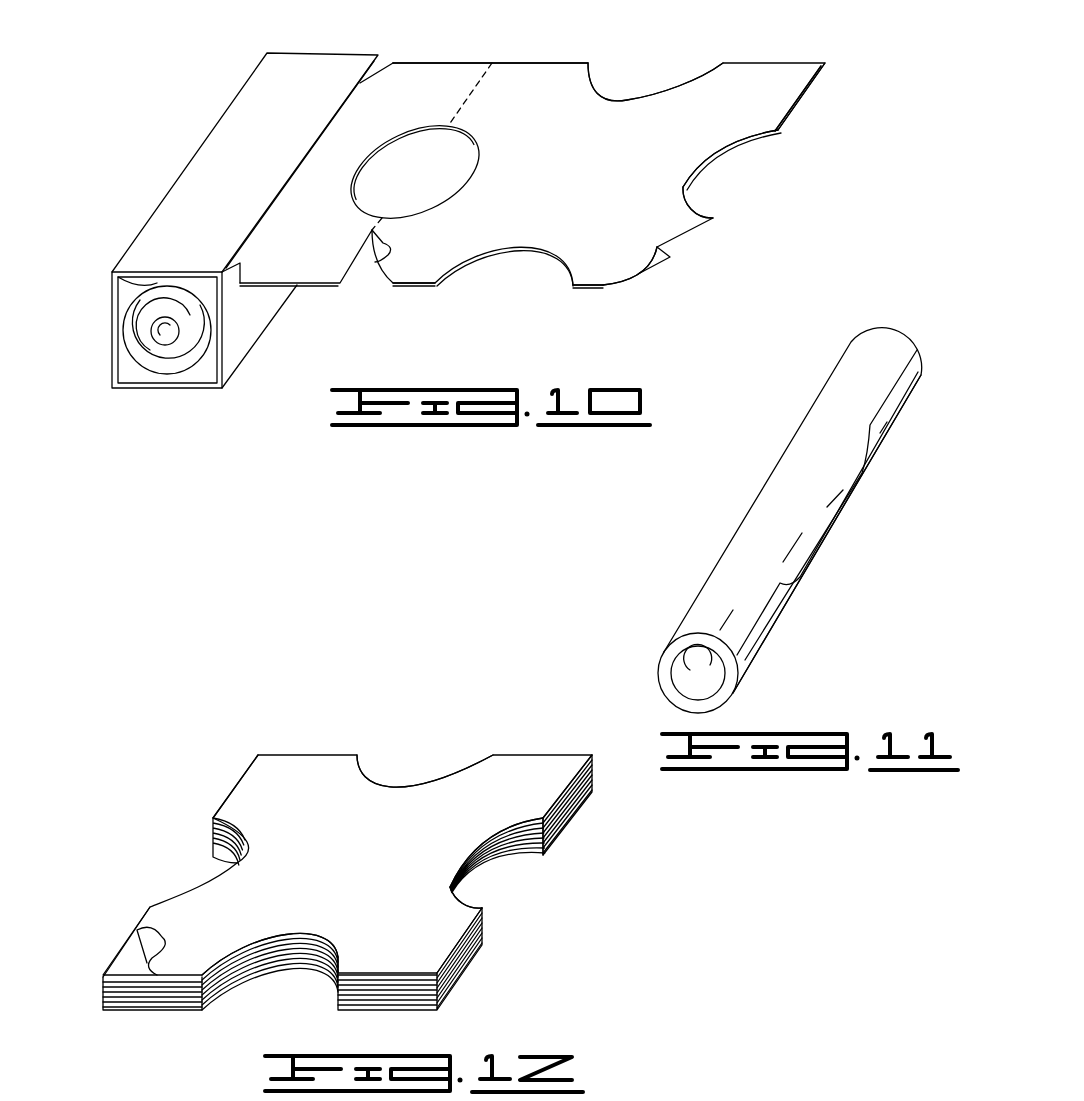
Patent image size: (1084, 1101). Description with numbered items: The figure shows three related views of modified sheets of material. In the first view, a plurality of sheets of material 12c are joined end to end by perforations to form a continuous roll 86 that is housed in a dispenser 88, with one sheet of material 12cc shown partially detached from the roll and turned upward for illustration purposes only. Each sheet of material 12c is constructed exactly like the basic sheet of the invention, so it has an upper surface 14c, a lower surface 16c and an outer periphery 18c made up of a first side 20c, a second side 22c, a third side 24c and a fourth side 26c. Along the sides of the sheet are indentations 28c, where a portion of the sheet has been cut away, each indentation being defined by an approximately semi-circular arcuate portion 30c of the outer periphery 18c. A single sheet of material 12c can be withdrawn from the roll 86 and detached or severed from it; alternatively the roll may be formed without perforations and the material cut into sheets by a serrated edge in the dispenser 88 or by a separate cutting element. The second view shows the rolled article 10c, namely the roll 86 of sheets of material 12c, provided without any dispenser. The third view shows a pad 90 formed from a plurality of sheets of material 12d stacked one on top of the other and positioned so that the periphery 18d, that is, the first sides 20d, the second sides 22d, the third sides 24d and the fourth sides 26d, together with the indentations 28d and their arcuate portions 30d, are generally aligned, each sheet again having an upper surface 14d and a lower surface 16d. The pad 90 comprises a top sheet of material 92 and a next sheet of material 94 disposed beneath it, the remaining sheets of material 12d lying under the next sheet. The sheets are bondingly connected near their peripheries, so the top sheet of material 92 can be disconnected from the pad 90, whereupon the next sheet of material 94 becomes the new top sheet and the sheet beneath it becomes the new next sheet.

In FIG. 11, the article 10c is at (734, 471).
In FIG. 10, the sheet of material 12c is at (764, 56).
In FIG. 11, the sheet of material 12c is at (727, 516).
In FIG. 10, the sheet of material 12cc is at (450, 52).
In FIG. 10, the upper surface 14c is at (790, 87).
In FIG. 10, the lower surface 16c is at (673, 257).
In FIG. 10, the outer periphery 18c is at (607, 285).
In FIG. 10, the first side 20c is at (798, 107).
In FIG. 10, the second side 22c is at (492, 63).
In FIG. 10, the third side 24c is at (548, 63).
In FIG. 10, the fourth side 26c is at (418, 287).
In FIG. 10, the indentation 28c is at (707, 163).
In FIG. 10, the arcuate portion 30c is at (747, 140).
In FIG. 10, the roll 86 is at (143, 322).
In FIG. 10, the dispenser 88 is at (277, 92).
In FIG. 12, the sheet of material 12d is at (528, 745).
In FIG. 12, the upper surface 14d is at (540, 763).
In FIG. 12, the lower surface 16d is at (137, 934).
In FIG. 12, the periphery 18d is at (402, 975).
In FIG. 12, the first side 20d is at (463, 933).
In FIG. 12, the second side 22d is at (227, 802).
In FIG. 12, the third side 24d is at (307, 755).
In FIG. 12, the fourth side 26d is at (185, 975).
In FIG. 12, the indentation 28d is at (407, 790).
In FIG. 12, the arcuate portion 30d is at (515, 830).
In FIG. 12, the pad 90 is at (547, 848).
In FIG. 12, the top sheet of material 92 is at (260, 800).
In FIG. 12, the next sheet of material 94 is at (127, 962).